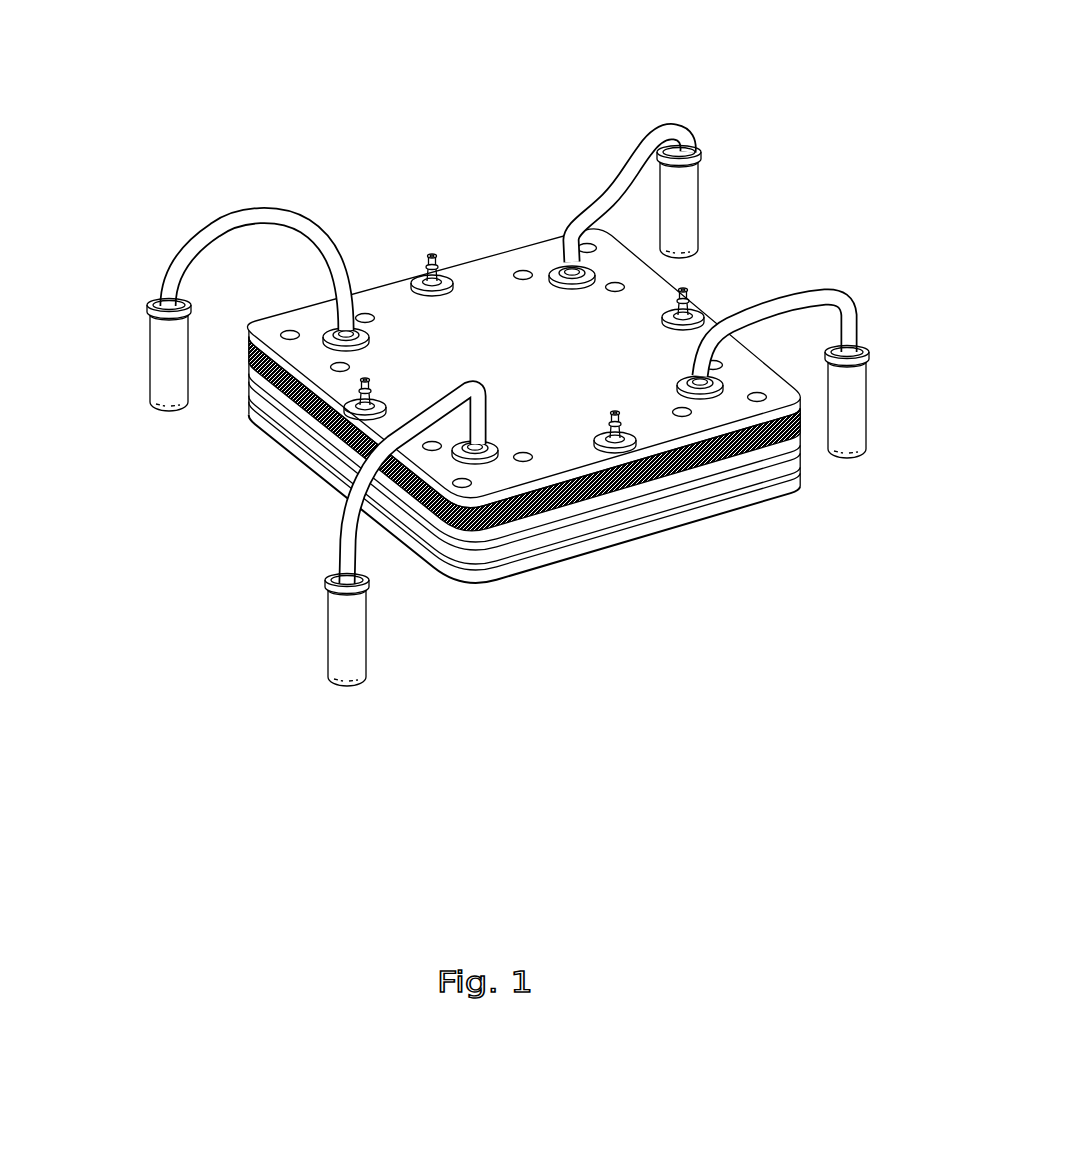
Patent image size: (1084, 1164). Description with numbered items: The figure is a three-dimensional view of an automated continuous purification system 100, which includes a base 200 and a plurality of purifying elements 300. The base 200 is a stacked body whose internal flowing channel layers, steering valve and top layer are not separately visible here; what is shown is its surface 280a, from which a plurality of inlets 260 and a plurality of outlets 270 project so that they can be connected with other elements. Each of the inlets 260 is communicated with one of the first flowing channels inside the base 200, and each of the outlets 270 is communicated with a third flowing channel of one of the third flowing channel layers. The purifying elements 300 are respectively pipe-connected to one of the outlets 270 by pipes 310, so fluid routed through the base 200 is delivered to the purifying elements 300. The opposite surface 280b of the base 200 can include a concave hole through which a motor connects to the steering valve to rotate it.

The automated continuous purification system 100 is at (140, 50).
The base 200 is at (286, 443).
The inlets 260 is at (420, 272).
The outlets 270 is at (326, 331).
The surface 280a is at (494, 273).
The surface 280b is at (570, 560).
The purifying elements 300 is at (152, 340).
The pipes 310 is at (247, 211).